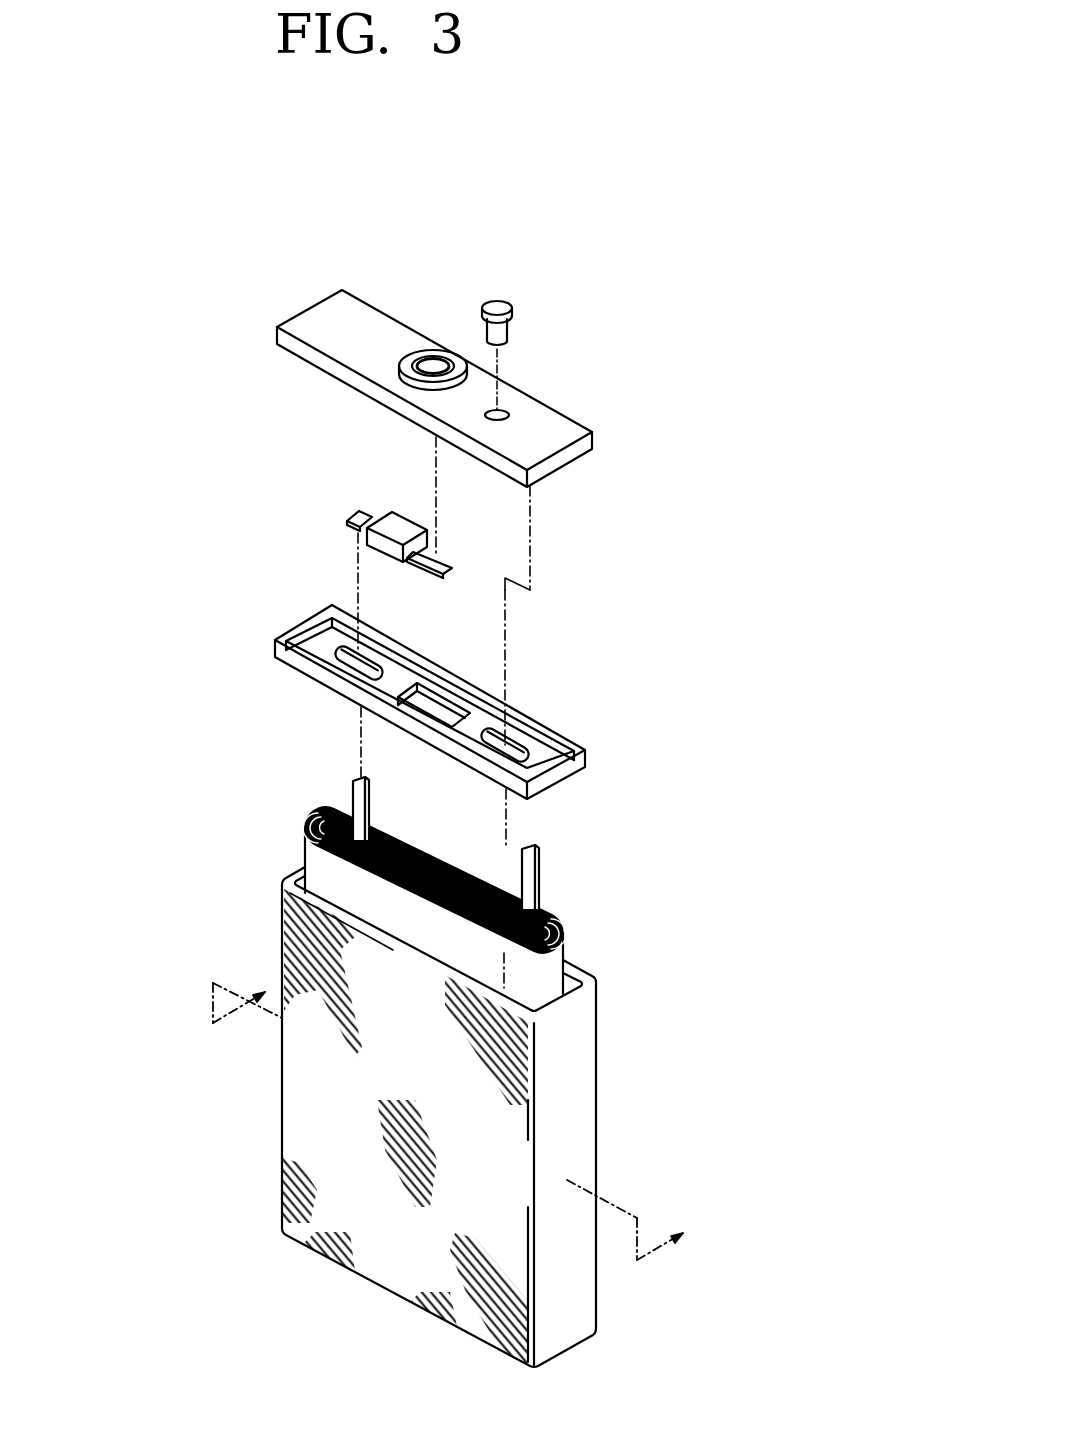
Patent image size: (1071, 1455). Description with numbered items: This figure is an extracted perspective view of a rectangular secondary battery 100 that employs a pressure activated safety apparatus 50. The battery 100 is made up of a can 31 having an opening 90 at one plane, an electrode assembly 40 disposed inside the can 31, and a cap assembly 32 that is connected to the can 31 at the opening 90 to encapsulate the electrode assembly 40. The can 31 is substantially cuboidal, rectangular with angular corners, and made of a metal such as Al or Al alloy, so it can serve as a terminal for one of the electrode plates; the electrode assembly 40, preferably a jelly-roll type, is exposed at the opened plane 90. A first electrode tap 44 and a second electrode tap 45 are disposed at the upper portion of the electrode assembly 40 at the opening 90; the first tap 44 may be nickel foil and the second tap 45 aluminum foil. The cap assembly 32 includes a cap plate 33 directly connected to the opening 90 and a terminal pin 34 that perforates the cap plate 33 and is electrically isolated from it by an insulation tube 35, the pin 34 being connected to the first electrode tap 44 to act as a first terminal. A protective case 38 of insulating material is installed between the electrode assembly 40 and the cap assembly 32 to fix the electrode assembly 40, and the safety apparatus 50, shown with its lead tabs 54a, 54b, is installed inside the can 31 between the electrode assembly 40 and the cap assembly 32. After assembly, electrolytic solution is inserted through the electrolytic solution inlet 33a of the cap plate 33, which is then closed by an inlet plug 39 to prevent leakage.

The rectangular secondary battery 100 is at (650, 278).
The can 31 is at (583, 1107).
The cap assembly 32 is at (542, 382).
The cap plate 33 is at (568, 428).
The electrolytic solution inlet 33a is at (486, 413).
The terminal pin 34 is at (434, 365).
The insulation tube 35 is at (409, 358).
The protective case 38 is at (568, 747).
The inlet plug 39 is at (500, 311).
The electrode assembly 40 is at (557, 972).
The first electrode tap 44 is at (353, 780).
The second electrode tap 45 is at (543, 871).
The safety apparatus 50 is at (406, 572).
The first lead tab 54a is at (355, 526).
The second lead tab 54b is at (448, 562).
The opening 90 is at (592, 980).